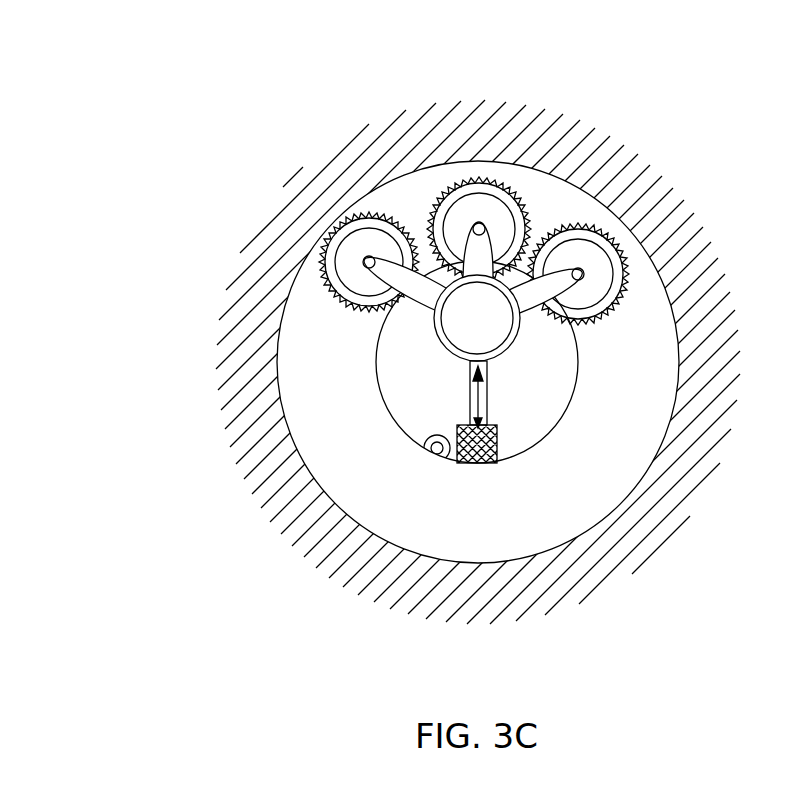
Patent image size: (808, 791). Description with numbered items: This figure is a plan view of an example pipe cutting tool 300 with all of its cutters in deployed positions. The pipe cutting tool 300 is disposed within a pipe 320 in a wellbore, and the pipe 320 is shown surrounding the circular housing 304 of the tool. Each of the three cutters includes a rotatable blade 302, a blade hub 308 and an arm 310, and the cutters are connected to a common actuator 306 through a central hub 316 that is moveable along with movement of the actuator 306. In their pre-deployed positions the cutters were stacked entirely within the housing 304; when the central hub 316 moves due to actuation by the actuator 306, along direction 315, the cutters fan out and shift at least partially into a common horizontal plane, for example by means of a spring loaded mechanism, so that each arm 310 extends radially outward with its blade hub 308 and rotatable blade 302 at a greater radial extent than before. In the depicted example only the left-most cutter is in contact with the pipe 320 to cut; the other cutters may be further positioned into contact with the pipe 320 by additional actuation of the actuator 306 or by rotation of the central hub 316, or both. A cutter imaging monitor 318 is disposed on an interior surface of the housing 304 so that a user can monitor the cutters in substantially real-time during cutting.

The pipe cutting tool 300 is at (684, 144).
The rotatable blade 302 is at (375, 210).
The housing 304 is at (525, 452).
The actuator 306 is at (483, 462).
The blade hub 308 is at (390, 248).
The arm 310 is at (425, 287).
The direction 315 is at (470, 405).
The central hub 316 is at (530, 338).
The cutter imaging monitor 318 is at (439, 455).
The pipe 320 is at (278, 385).